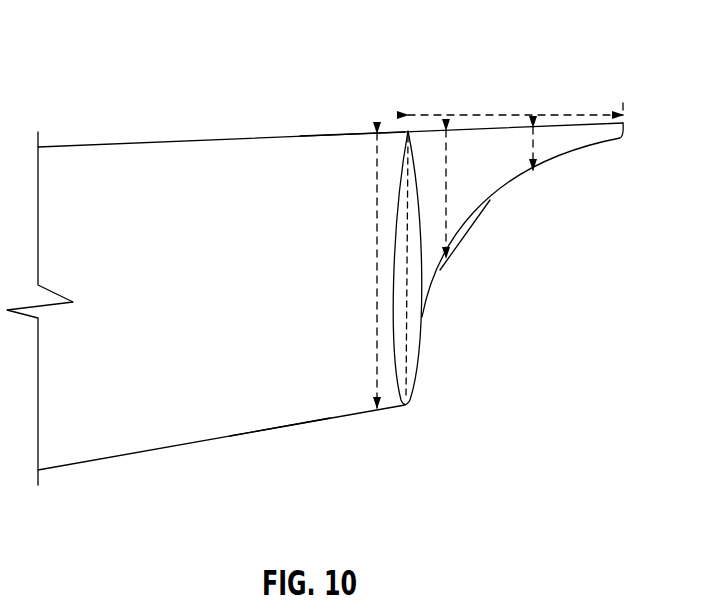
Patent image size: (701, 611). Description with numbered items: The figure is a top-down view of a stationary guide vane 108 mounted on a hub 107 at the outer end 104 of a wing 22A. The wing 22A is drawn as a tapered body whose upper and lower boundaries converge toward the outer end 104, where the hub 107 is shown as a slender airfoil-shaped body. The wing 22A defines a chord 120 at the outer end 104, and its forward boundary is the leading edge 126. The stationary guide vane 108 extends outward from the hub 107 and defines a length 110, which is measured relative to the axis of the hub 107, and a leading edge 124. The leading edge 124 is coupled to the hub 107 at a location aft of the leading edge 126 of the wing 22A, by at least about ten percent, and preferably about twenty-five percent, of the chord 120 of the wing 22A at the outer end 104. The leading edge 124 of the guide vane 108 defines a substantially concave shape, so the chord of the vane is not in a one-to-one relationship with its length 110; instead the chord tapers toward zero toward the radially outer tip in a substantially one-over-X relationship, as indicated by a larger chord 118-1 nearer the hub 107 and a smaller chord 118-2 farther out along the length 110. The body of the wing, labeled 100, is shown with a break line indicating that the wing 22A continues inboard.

The wing 22A is at (215, 108).
The blade body 100 is at (177, 430).
The outer end 104 is at (348, 108).
The hub 107 is at (423, 337).
The stationary guide vane 108 is at (483, 203).
The length 110 is at (508, 118).
The chord 118-1 is at (448, 162).
The chord 118-2 is at (548, 148).
The chord 120 is at (375, 262).
The leading edge 124 is at (464, 236).
The leading edge 126 is at (285, 447).